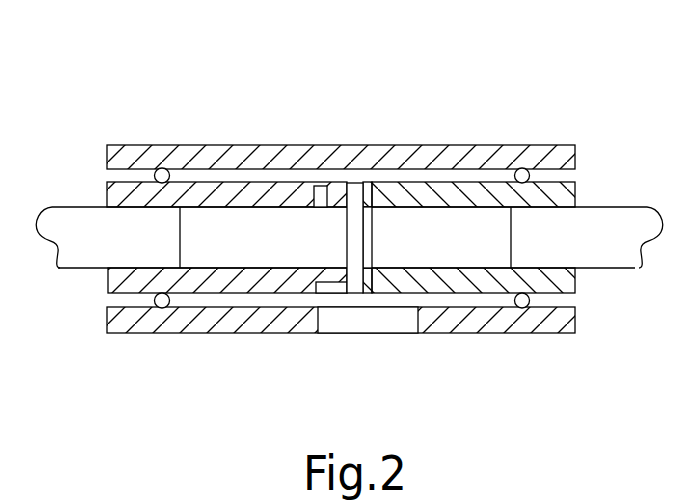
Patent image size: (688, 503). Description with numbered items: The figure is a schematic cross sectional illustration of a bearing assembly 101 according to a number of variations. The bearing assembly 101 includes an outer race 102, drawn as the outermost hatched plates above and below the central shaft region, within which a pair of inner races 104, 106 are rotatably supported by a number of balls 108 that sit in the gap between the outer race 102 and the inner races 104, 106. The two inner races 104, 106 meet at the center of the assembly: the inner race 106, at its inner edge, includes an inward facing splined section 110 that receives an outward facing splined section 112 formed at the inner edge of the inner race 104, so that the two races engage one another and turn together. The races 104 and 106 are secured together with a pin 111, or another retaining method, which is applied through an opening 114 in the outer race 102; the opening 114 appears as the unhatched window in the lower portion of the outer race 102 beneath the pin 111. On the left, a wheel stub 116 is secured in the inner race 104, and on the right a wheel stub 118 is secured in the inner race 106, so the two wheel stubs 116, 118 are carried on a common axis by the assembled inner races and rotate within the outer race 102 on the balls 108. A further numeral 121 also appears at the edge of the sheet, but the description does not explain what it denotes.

The bearing assembly 101 is at (503, 62).
The outer race 102 is at (257, 155).
The inner race 104 is at (243, 287).
The inner race 106 is at (458, 282).
The balls 108 is at (163, 168).
The inward facing splined section 110 is at (333, 203).
The pin 111 is at (368, 238).
The outward facing splined section 112 is at (343, 282).
The opening 114 is at (320, 323).
The wheel stub 116 is at (90, 250).
The wheel stub 118 is at (587, 223).
The component 121 is at (546, 502).